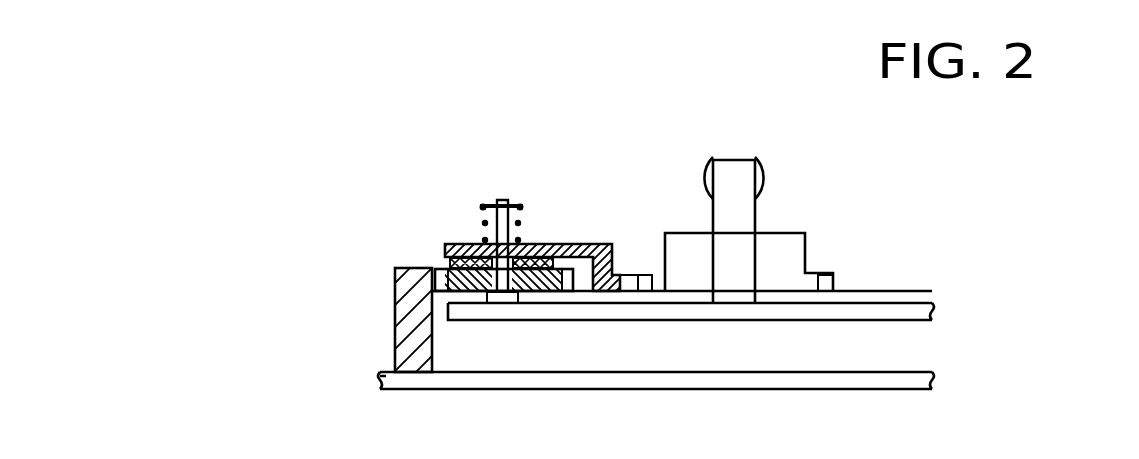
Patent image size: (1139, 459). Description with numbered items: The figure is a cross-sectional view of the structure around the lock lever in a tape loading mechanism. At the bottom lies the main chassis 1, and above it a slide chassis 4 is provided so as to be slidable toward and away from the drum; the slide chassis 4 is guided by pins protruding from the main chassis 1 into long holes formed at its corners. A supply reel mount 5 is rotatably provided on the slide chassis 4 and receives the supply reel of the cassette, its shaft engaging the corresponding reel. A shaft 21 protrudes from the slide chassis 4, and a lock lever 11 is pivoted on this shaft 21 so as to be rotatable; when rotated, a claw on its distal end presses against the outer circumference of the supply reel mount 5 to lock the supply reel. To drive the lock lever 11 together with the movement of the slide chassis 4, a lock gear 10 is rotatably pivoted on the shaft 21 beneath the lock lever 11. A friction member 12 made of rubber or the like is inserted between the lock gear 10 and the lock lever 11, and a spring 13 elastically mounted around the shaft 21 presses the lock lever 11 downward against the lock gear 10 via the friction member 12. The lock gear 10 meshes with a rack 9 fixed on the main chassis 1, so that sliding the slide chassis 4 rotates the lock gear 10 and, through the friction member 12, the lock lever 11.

The main chassis 1 is at (381, 372).
The slide chassis 4 is at (866, 308).
The supply reel mount 5 is at (787, 242).
The rack 9 is at (397, 288).
The lock gear 10 is at (436, 268).
The lock lever 11 is at (477, 243).
The friction member 12 is at (553, 243).
The spring 13 is at (525, 222).
The shaft 21 is at (503, 198).